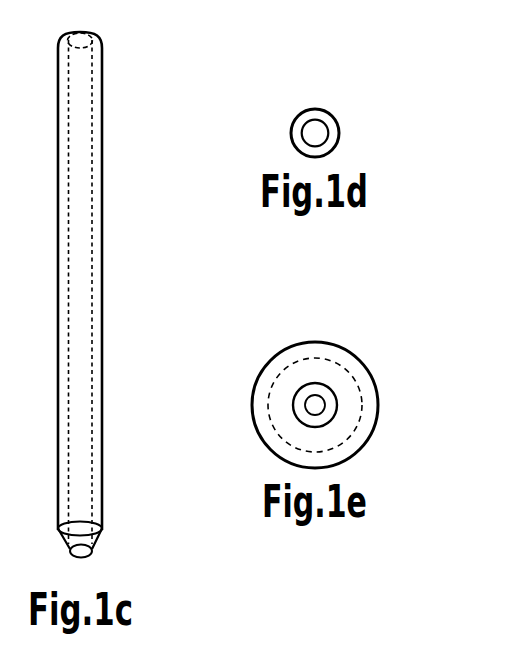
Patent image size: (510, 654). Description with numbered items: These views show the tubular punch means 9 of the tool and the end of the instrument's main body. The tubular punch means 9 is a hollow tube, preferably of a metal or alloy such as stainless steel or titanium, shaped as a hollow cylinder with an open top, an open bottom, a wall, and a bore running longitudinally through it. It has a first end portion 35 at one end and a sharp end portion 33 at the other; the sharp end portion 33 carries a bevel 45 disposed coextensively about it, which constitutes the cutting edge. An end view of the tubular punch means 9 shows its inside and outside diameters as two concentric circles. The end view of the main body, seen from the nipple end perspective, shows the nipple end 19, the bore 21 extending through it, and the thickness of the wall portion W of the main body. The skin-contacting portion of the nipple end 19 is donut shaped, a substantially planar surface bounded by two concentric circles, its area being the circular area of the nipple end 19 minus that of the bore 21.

In FIG. 1C, the tubular punch means 9 is at (102, 286).
In FIG. 1D, the tubular punch means 9 is at (315, 109).
In FIG. 1C, the first end portion 35 is at (83, 33).
In FIG. 1C, the sharp end portion 33 is at (72, 557).
In FIG. 1C, the bevel 45 is at (97, 540).
In FIG. 1E, the nipple end 19 is at (295, 396).
In FIG. 1E, the bore 21 is at (325, 405).
In FIG. 1E, the wall portion W is at (316, 352).